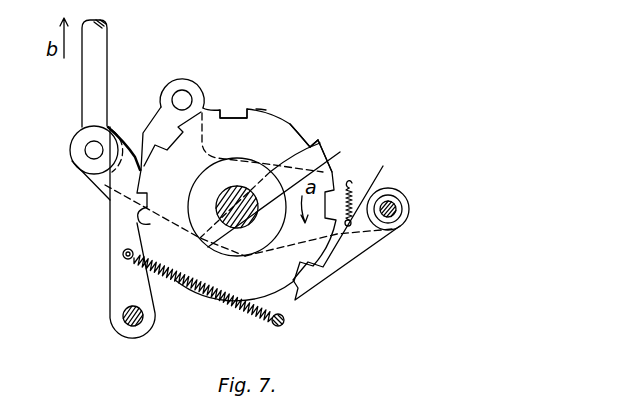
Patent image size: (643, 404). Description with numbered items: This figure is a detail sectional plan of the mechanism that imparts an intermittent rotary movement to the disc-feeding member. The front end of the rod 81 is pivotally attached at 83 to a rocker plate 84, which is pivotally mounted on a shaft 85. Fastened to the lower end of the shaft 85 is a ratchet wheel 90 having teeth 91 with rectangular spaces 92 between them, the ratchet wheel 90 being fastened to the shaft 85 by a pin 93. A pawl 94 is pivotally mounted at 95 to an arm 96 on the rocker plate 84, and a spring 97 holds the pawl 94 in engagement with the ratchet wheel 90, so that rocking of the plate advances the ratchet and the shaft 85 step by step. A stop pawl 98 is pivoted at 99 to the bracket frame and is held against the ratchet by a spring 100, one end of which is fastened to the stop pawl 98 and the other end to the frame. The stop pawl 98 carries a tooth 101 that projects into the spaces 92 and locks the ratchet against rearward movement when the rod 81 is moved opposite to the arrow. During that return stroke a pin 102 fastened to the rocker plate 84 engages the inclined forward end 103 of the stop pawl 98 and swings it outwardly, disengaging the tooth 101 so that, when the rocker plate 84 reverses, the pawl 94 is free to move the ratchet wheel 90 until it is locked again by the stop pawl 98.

The rod 81 is at (99, 57).
The pivot of rod on rocker plate 83 is at (88, 150).
The rocker plate 84 is at (105, 181).
The shaft 85 is at (325, 153).
The ratchet wheel 90 is at (273, 119).
The teeth 91 is at (262, 106).
The rectangular spaces 92 is at (233, 111).
The pin 93 is at (311, 148).
The pawl 94 is at (352, 255).
The pivot of pawl 95 is at (394, 210).
The arm 96 is at (410, 210).
The spring 97 is at (362, 180).
The stop pawl 98 is at (120, 236).
The pivot of stop pawl 99 is at (136, 324).
The spring 100 is at (205, 297).
The tooth 101 is at (150, 208).
The pin 102 is at (187, 96).
The inclined forward end 103 is at (128, 138).